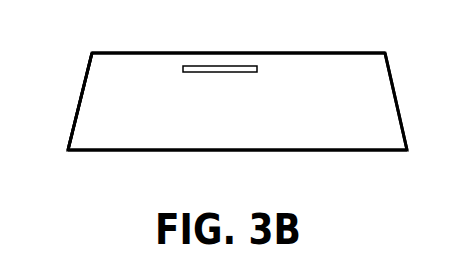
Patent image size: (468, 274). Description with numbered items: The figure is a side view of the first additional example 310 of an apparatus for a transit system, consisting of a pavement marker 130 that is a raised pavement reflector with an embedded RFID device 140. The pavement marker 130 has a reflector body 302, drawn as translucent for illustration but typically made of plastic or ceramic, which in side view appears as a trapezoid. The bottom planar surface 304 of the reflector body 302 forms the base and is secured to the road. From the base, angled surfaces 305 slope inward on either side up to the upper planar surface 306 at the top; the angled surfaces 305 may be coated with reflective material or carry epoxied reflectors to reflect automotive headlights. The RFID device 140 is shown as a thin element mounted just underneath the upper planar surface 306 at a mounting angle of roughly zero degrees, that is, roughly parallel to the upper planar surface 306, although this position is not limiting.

The first additional example 310 is at (97, 40).
The RFID device 140 is at (203, 66).
The upper planar surface 306 is at (351, 53).
The angled surfaces 305 is at (391, 75).
The bottom planar surface 304 is at (387, 152).
The reflector body 302 is at (82, 89).
The pavement marker 130 is at (72, 124).